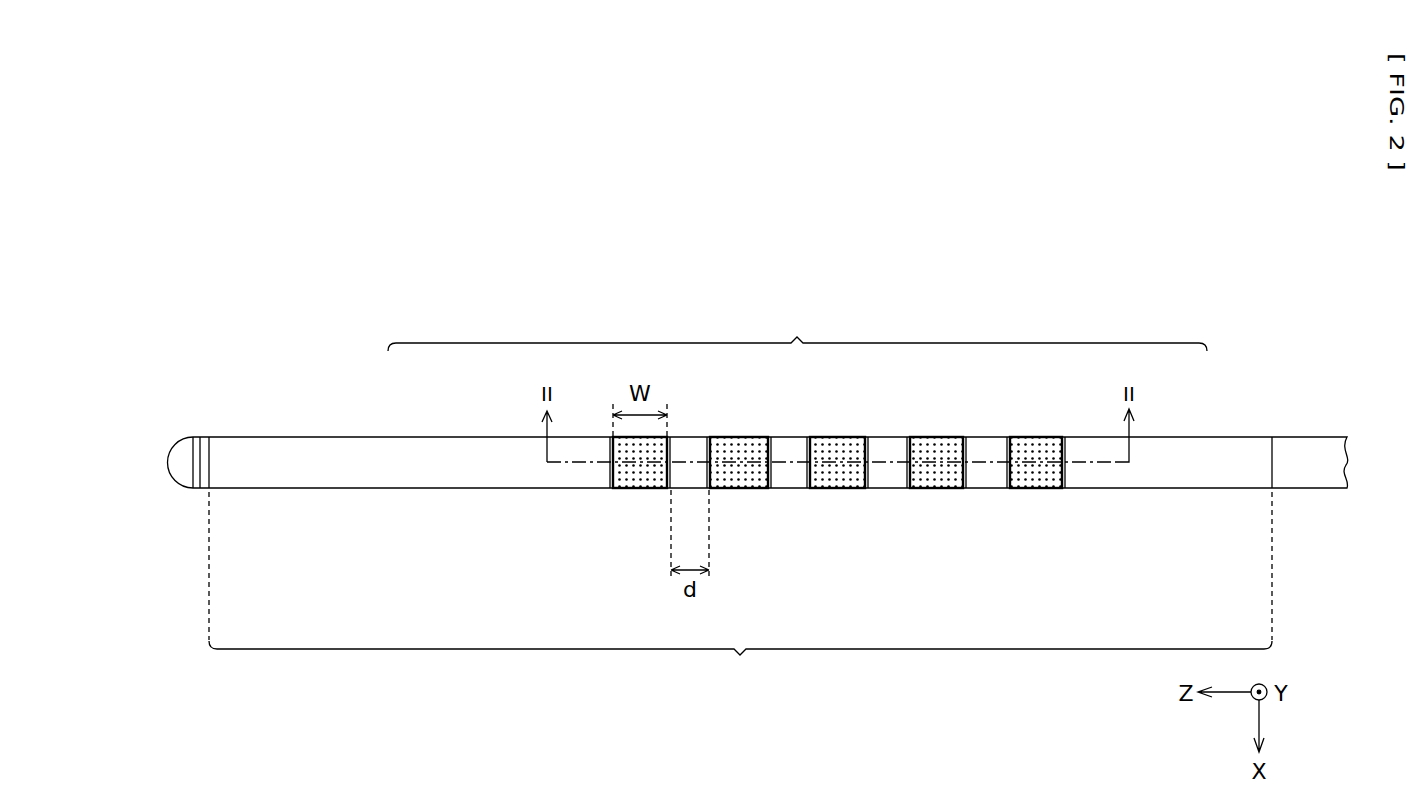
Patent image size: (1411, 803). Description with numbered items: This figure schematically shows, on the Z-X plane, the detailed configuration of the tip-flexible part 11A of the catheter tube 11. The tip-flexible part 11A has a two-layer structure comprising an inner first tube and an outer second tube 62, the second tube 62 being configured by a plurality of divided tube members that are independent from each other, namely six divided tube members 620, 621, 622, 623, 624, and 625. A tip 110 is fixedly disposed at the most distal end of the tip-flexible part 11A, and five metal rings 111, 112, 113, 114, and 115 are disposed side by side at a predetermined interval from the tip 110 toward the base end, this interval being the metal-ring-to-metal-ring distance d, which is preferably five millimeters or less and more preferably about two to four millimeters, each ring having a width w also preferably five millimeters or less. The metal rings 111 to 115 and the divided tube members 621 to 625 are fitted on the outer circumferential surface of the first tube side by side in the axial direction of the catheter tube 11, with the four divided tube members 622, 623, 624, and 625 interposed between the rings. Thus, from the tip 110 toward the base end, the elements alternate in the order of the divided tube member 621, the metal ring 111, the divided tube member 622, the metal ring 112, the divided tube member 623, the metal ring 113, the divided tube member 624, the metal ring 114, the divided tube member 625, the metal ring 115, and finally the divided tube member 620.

The catheter tube 11 is at (1307, 447).
The tip-flexible part 11A is at (740, 590).
The tip 110 is at (182, 473).
The metal ring 111 is at (646, 492).
The metal ring 112 is at (746, 492).
The metal ring 113 is at (844, 492).
The metal ring 114 is at (942, 492).
The metal ring 115 is at (1042, 492).
The second tube 62 is at (797, 327).
The divided tube member 620 is at (1187, 447).
The divided tube member 621 is at (408, 447).
The divided tube member 622 is at (687, 447).
The divided tube member 623 is at (787, 447).
The divided tube member 624 is at (887, 447).
The divided tube member 625 is at (987, 447).